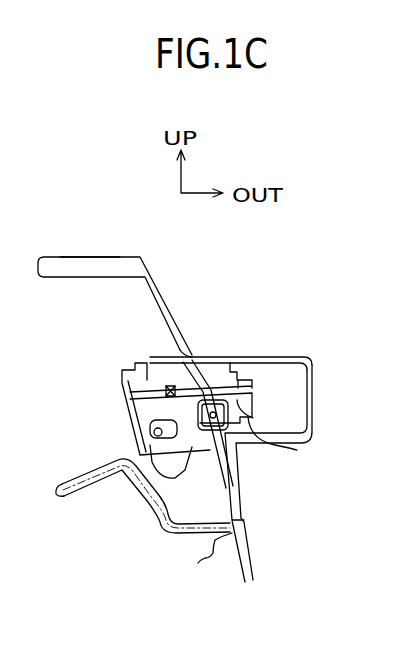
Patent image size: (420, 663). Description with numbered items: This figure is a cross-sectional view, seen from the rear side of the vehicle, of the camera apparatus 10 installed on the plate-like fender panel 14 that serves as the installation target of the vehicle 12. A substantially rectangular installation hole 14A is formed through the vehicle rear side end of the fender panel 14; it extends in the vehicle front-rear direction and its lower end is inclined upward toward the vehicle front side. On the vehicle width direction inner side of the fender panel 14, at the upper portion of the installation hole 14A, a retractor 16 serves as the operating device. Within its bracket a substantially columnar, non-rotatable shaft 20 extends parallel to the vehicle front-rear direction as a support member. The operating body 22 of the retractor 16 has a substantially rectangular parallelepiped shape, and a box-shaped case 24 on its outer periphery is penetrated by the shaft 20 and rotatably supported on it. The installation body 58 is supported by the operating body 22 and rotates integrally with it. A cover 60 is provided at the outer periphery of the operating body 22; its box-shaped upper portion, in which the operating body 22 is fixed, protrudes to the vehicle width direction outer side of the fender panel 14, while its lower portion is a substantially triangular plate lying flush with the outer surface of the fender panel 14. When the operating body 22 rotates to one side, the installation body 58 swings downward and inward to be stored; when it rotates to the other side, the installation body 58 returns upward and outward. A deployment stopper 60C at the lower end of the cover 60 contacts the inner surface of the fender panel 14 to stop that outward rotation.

The camera apparatus 10 is at (318, 317).
The vehicle 12 is at (96, 244).
The fender panel 14 is at (158, 290).
The installation hole 14A is at (248, 318).
The retractor 16 is at (297, 450).
The shaft 20 is at (168, 390).
The operating body 22 is at (173, 497).
The case 24 is at (252, 395).
The installation body 58 is at (285, 346).
The cover 60 is at (315, 377).
The deployment stopper 60C is at (213, 562).